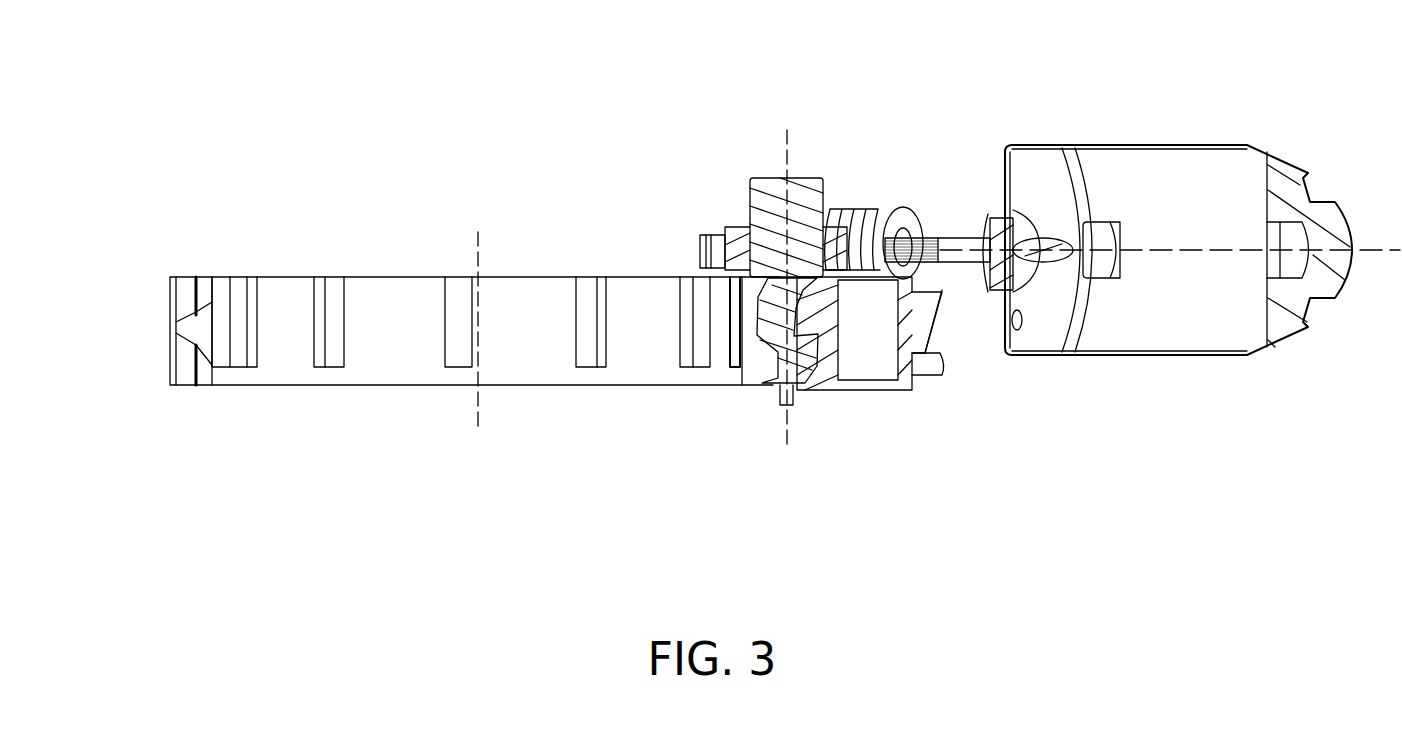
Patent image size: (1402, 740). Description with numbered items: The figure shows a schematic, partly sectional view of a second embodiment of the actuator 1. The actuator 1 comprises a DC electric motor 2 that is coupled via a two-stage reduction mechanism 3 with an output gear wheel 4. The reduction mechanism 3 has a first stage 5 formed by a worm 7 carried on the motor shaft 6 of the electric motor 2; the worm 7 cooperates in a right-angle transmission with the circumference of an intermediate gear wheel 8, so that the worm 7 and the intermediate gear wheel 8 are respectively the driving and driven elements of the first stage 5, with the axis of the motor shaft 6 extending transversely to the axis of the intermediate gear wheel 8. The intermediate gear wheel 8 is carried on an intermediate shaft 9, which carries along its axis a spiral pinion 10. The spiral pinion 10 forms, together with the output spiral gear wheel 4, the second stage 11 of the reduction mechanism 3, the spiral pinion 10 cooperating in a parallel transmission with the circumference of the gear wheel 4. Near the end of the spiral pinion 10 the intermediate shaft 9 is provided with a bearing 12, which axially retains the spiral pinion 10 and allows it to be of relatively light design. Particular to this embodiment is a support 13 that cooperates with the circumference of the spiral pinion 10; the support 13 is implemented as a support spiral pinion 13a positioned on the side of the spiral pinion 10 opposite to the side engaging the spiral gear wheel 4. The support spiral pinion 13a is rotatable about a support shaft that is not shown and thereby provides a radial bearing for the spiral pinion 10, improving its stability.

The actuator 1 is at (993, 498).
The electric motor 2 is at (1152, 162).
The reduction mechanism 3 is at (128, 179).
The output gear wheel 4 is at (291, 290).
The first stage 5 is at (922, 113).
The motor shaft 6 is at (957, 236).
The worm 7 is at (906, 207).
The intermediate gear wheel 8 is at (700, 253).
The intermediate shaft 9 is at (762, 200).
The spiral pinion 10 is at (810, 385).
The second stage 11 is at (172, 483).
The bearing 12 is at (775, 395).
The support 13 is at (937, 380).
The support spiral pinion 13a is at (991, 363).